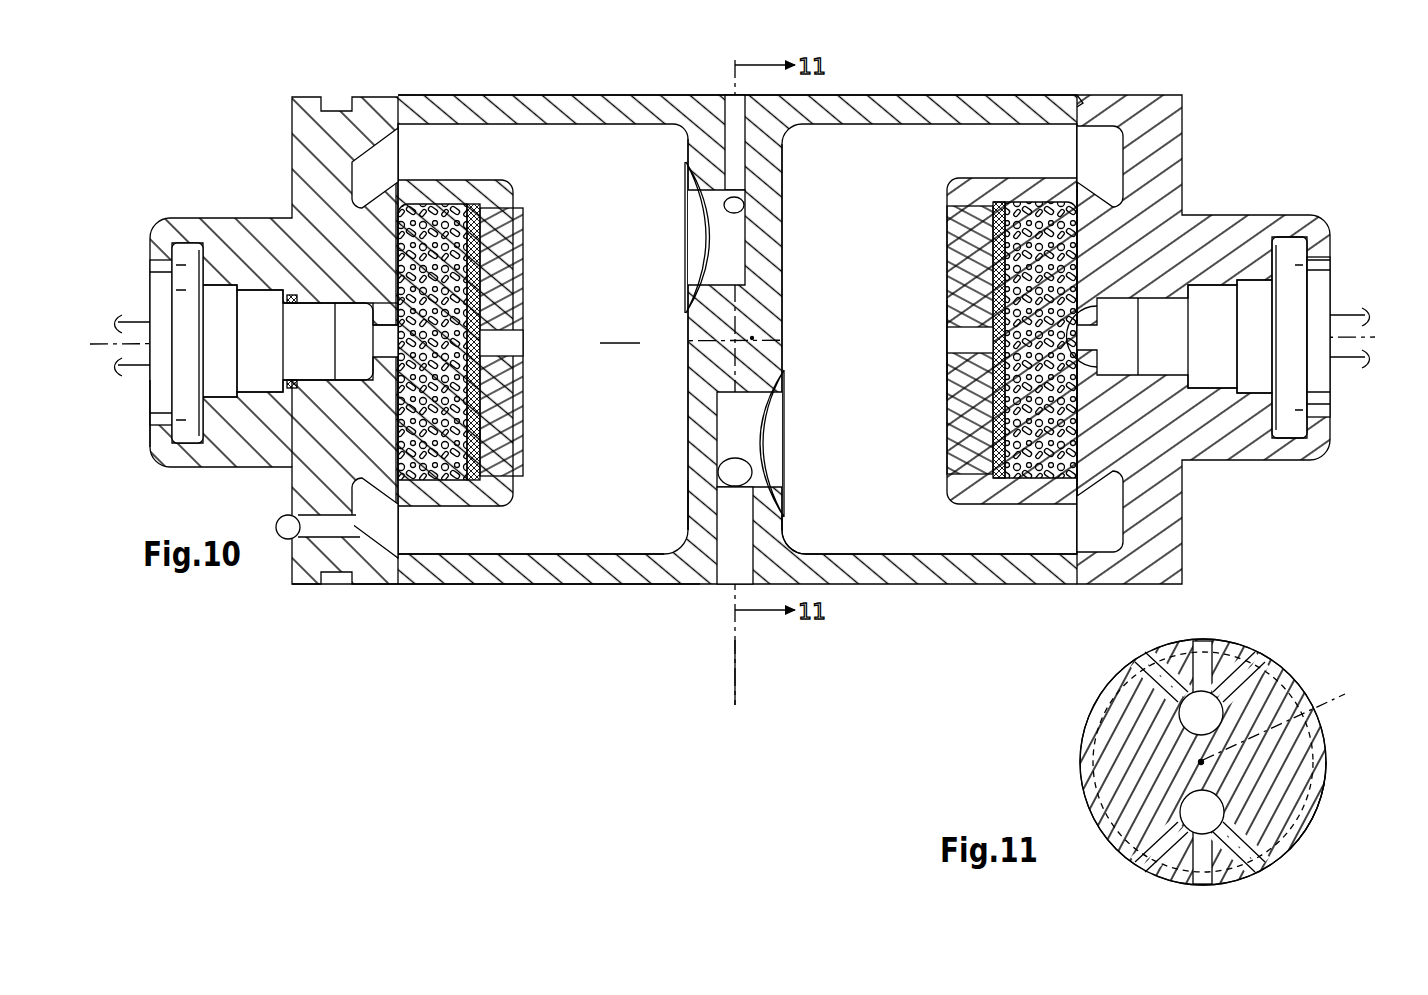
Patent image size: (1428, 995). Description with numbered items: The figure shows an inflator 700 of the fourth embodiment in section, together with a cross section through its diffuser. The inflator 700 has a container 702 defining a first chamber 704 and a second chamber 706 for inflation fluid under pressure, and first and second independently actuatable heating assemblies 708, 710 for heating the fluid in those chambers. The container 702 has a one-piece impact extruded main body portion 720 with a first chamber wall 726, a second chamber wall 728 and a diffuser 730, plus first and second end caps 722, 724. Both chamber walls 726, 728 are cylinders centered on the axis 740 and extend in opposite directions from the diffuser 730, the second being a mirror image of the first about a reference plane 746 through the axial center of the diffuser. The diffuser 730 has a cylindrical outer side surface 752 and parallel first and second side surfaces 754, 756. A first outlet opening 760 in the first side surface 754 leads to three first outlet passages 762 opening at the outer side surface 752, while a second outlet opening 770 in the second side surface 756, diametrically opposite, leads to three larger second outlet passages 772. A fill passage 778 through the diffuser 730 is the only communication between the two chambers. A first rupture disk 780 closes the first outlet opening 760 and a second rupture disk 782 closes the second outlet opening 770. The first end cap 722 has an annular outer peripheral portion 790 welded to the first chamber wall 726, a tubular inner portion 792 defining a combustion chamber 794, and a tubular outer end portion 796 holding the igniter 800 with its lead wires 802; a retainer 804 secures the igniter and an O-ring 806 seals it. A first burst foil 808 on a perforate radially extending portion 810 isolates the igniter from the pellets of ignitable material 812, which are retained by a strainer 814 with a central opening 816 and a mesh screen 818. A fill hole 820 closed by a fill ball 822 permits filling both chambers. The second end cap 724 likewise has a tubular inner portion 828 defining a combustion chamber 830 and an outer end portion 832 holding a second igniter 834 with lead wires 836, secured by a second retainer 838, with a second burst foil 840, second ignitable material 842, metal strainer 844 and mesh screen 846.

In FIG. 10, the inflator 700 is at (401, 636).
In FIG. 11, the inflator 700 is at (1345, 780).
In FIG. 10, the container 702 is at (623, 594).
In FIG. 10, the first chamber 704 is at (590, 478).
In FIG. 10, the second chamber 706 is at (873, 312).
In FIG. 10, the first heating assembly 708 is at (529, 170).
In FIG. 10, the second heating assembly 710 is at (928, 385).
In FIG. 10, the main body portion 720 is at (547, 590).
In FIG. 10, the first end cap 722 is at (290, 590).
In FIG. 10, the second end cap 724 is at (1106, 590).
In FIG. 10, the first chamber wall 726 is at (457, 570).
In FIG. 10, the second chamber wall 728 is at (870, 567).
In FIG. 10, the diffuser 730 is at (795, 258).
In FIG. 11, the diffuser 730 is at (1080, 782).
In FIG. 10, the axis 740 is at (606, 337).
In FIG. 11, the axis 740 is at (1299, 721).
In FIG. 10, the reference plane 746 is at (732, 655).
In FIG. 11, the outer side surface 752 is at (1276, 660).
In FIG. 10, the first side surface 754 is at (687, 505).
In FIG. 10, the second side surface 756 is at (782, 532).
In FIG. 10, the first outlet opening 760 is at (720, 250).
In FIG. 11, the first outlet opening 760 is at (1195, 713).
In FIG. 10, the first outlet passages 762 is at (740, 145).
In FIG. 11, the first outlet passages 762 is at (1208, 662).
In FIG. 10, the second outlet opening 770 is at (752, 408).
In FIG. 11, the second outlet opening 770 is at (1203, 812).
In FIG. 10, the second outlet passages 772 is at (723, 567).
In FIG. 11, the second outlet passages 772 is at (1210, 874).
In FIG. 10, the fill passage 778 is at (752, 337).
In FIG. 11, the fill passage 778 is at (1198, 762).
In FIG. 10, the first rupture disk 780 is at (706, 207).
In FIG. 10, the second rupture disk 782 is at (763, 447).
In FIG. 10, the outer peripheral portion 790 is at (375, 145).
In FIG. 10, the inner portion 792 is at (455, 200).
In FIG. 10, the combustion chamber 794 is at (430, 215).
In FIG. 10, the outer end portion 796 is at (233, 218).
In FIG. 10, the igniter 800 is at (262, 318).
In FIG. 10, the lead wires 802 is at (133, 320).
In FIG. 10, the retainer 804 is at (148, 392).
In FIG. 10, the O-ring 806 is at (290, 383).
In FIG. 10, the first burst foil 808 is at (480, 358).
In FIG. 10, the perforate radially extending portion 810 is at (390, 313).
In FIG. 10, the ignitable material 812 is at (387, 250).
In FIG. 10, the strainer 814 is at (509, 265).
In FIG. 10, the central opening 816 is at (503, 330).
In FIG. 10, the mesh screen 818 is at (480, 430).
In FIG. 10, the fill hole 820 is at (322, 527).
In FIG. 10, the fill ball 822 is at (277, 523).
In FIG. 10, the inner portion 828 is at (1048, 195).
In FIG. 10, the combustion chamber 830 is at (1008, 198).
In FIG. 10, the outer end portion 832 is at (1217, 300).
In FIG. 10, the second igniter 834 is at (1247, 233).
In FIG. 10, the lead wires 836 is at (1343, 310).
In FIG. 10, the second retainer 838 is at (1315, 290).
In FIG. 10, the second burst foil 840 is at (1022, 295).
In FIG. 10, the second ignitable material 842 is at (1087, 229).
In FIG. 10, the metal strainer 844 is at (970, 427).
In FIG. 10, the mesh screen 846 is at (997, 480).